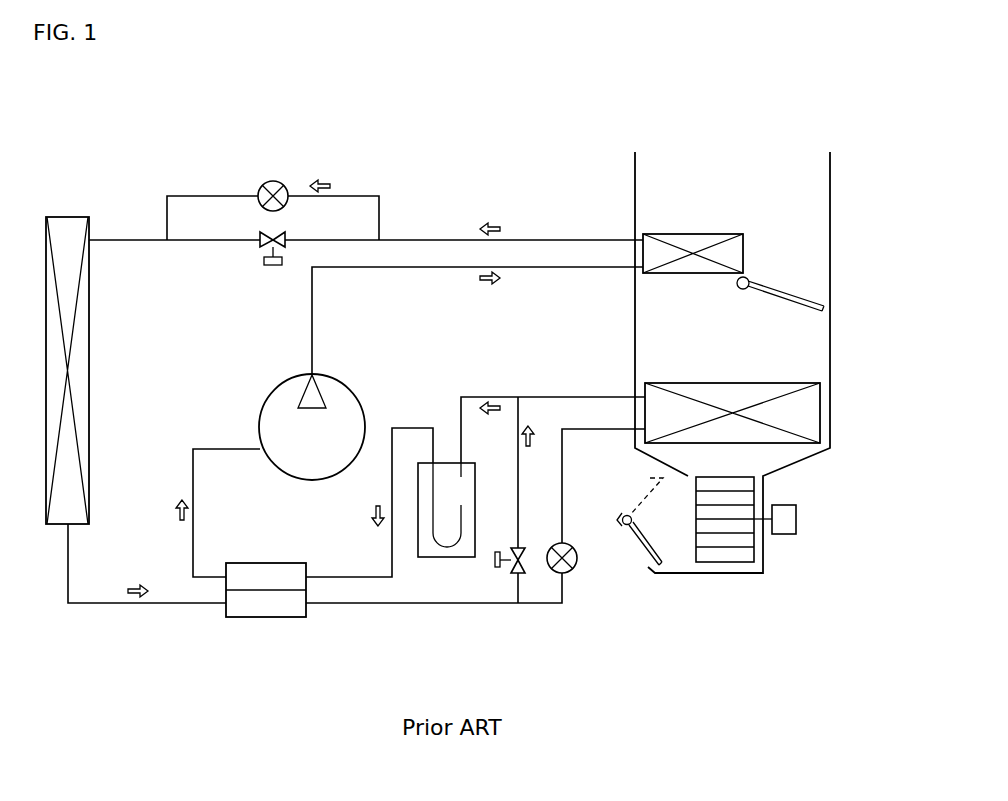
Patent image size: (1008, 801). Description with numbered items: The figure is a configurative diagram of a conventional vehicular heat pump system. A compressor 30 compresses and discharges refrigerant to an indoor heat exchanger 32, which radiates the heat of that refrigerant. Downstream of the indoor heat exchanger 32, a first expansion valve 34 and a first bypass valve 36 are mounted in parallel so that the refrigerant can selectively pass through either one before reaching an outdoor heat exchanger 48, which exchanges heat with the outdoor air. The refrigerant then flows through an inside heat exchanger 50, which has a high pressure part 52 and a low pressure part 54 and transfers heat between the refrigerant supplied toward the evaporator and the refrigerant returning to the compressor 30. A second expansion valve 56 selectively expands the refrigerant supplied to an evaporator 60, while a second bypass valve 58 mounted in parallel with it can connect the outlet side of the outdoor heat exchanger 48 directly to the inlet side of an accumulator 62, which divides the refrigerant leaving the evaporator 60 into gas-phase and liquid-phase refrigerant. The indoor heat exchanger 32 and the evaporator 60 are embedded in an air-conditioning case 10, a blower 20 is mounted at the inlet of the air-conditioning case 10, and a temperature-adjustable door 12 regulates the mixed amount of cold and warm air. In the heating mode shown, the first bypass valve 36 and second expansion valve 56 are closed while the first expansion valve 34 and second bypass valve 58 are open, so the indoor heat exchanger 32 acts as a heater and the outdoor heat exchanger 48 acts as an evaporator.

The air-conditioning case 10 is at (830, 180).
The temperature-adjustable door 12 is at (790, 296).
The blower 20 is at (742, 498).
The compressor 30 is at (283, 382).
The indoor heat exchanger 32 is at (690, 233).
The first expansion valve 34 is at (271, 181).
The first bypass valve 36 is at (272, 266).
The outdoor heat exchanger 48 is at (67, 217).
The inside heat exchanger 50 is at (273, 597).
The high pressure part 52 is at (258, 603).
The low pressure part 54 is at (258, 570).
The second expansion valve 56 is at (578, 572).
The second bypass valve 58 is at (496, 566).
The evaporator 60 is at (803, 412).
The accumulator 62 is at (448, 462).